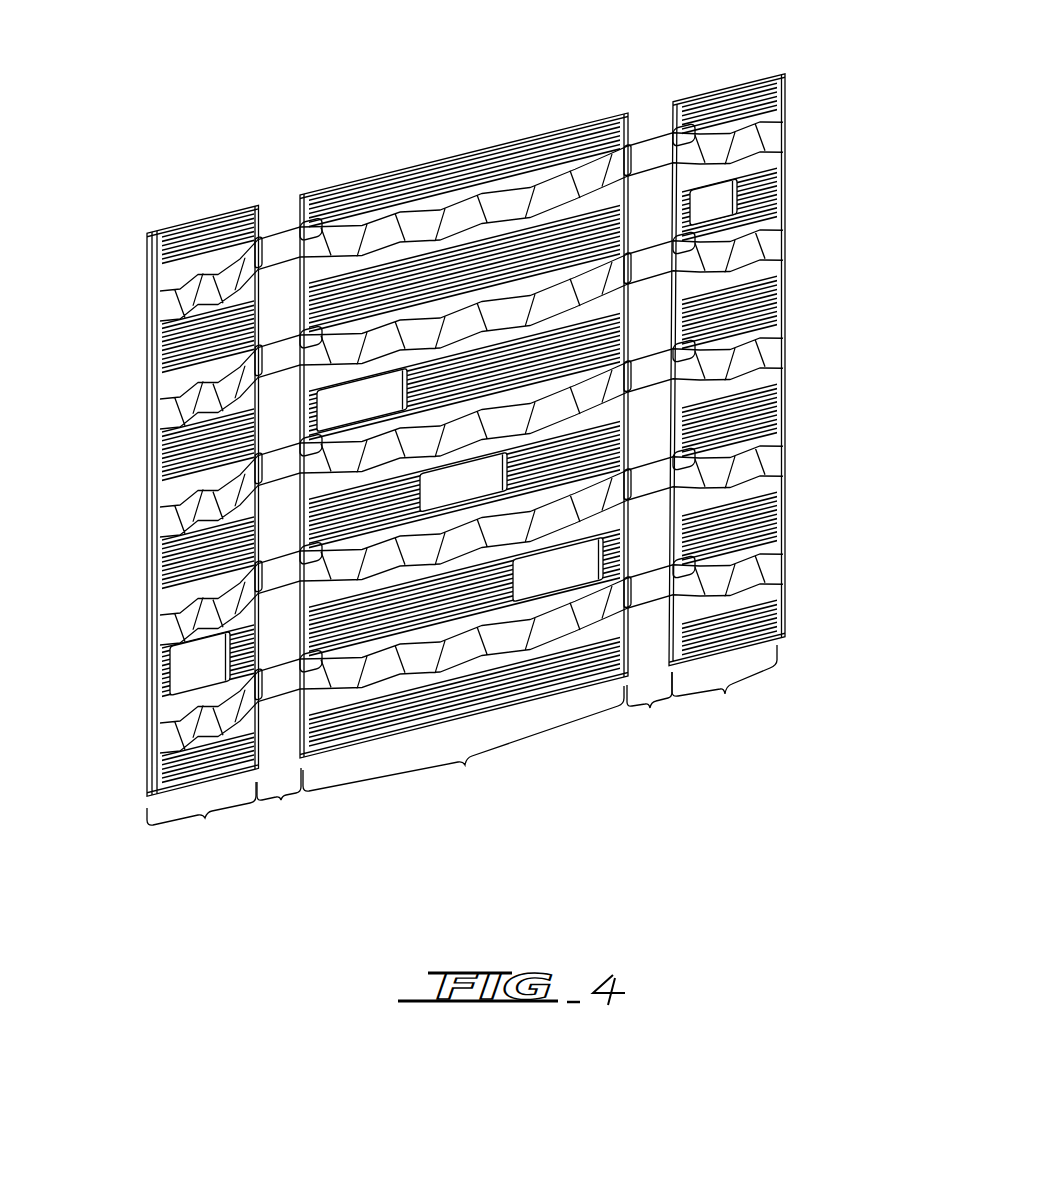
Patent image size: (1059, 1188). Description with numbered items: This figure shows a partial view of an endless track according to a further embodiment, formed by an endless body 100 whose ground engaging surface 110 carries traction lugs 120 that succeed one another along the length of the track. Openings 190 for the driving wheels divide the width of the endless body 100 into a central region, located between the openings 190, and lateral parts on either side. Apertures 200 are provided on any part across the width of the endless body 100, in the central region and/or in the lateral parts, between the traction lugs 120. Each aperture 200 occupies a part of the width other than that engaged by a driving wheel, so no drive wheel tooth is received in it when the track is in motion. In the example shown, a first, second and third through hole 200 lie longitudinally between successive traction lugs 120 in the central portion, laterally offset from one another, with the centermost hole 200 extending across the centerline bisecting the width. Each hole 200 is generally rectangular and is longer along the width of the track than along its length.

The endless body 100 is at (475, 522).
The ground engaging surface 110 is at (785, 95).
The traction lug 120 is at (652, 380).
The opening for driving wheel 190 is at (652, 549).
The aperture 200 is at (183, 675).